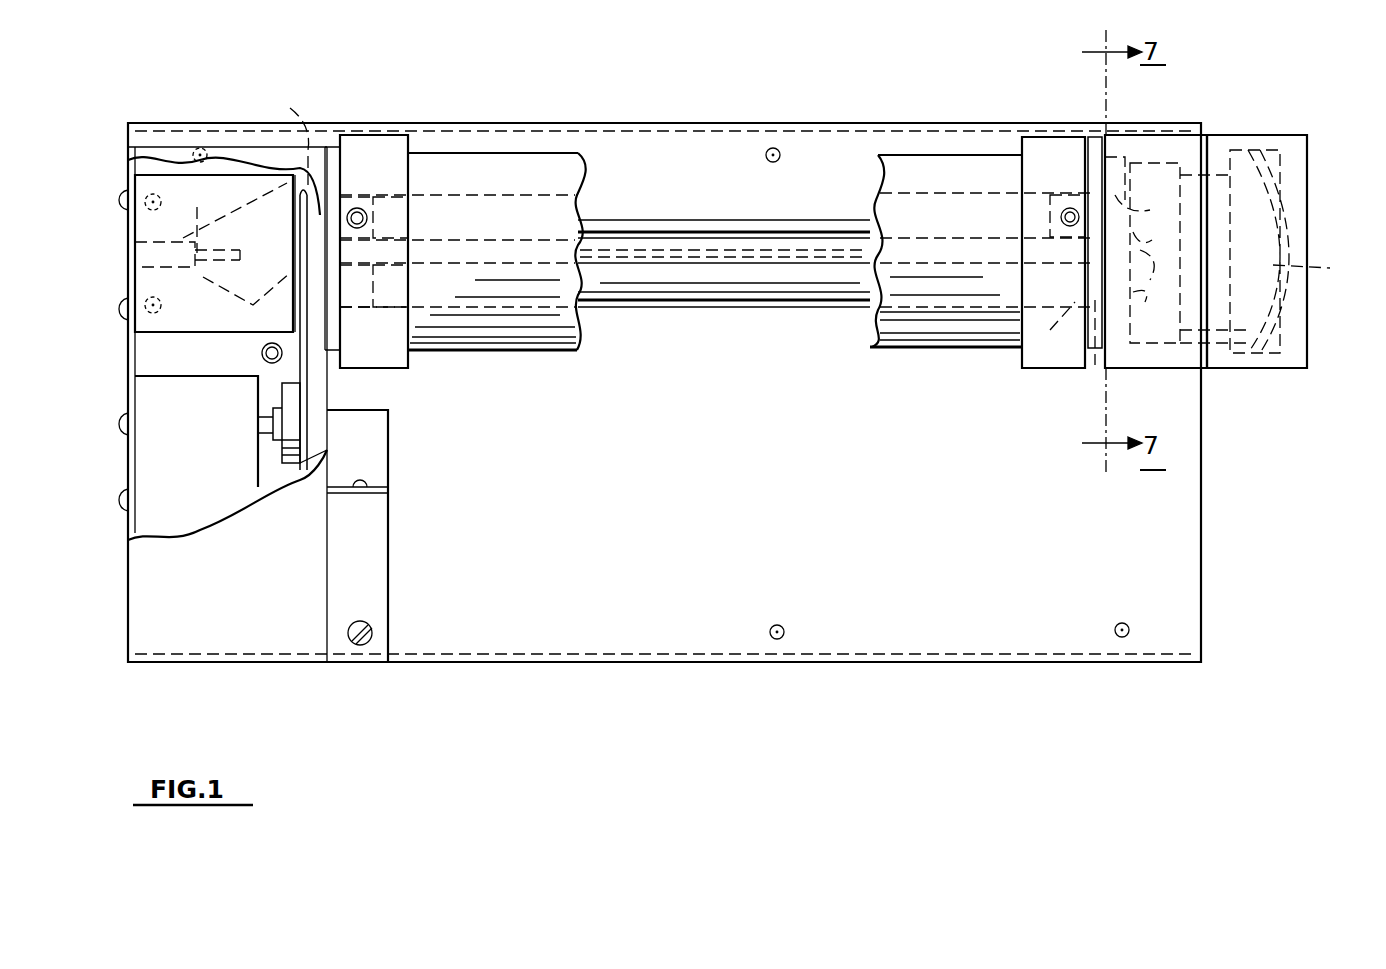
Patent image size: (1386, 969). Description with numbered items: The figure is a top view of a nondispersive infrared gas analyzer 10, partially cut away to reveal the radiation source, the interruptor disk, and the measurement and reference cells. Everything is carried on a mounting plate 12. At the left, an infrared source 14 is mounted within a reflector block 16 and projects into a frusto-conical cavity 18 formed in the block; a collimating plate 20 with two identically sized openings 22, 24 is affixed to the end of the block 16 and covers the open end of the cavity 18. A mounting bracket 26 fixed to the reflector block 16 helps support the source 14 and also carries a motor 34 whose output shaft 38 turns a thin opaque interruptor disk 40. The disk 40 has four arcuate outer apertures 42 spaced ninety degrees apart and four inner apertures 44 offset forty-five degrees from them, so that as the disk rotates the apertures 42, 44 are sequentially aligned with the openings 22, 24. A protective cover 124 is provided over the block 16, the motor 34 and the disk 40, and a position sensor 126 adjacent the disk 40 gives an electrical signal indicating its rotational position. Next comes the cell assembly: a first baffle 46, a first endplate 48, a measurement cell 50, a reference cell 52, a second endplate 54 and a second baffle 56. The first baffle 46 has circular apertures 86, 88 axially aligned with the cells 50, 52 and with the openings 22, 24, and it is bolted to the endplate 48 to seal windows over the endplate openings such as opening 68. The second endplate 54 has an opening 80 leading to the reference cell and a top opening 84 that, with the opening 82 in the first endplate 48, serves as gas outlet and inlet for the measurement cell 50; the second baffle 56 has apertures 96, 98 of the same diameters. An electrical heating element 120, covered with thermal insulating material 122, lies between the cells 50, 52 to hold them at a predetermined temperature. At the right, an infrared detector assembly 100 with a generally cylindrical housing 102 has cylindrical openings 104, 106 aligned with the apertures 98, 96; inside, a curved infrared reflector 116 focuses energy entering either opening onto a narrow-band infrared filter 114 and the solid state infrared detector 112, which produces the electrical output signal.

The nondispersive infrared gas analyzer 10 is at (1310, 470).
The mounting plate 12 is at (1212, 580).
The infrared source 14 is at (215, 240).
The reflector block 16 is at (155, 286).
The frusto-conical cavity 18 is at (225, 268).
The collimating plate 20 is at (283, 313).
The opening 22 is at (235, 210).
The opening 24 is at (244, 299).
The mounting bracket 26 is at (128, 353).
The motor 34 is at (168, 460).
The motor output shaft 38 is at (265, 425).
The interruptor disk 40 is at (308, 372).
The outer apertures 42 is at (224, 148).
The inner apertures 44 is at (303, 272).
The first baffle 46 is at (325, 150).
The first endplate 48 is at (380, 135).
The measurement cell 50 is at (826, 200).
The reference cell 52 is at (818, 300).
The second endplate 54 is at (1035, 145).
The second baffle 56 is at (1095, 150).
The opening 68 is at (410, 283).
The opening 80 is at (1052, 331).
The opening 82 is at (360, 210).
The opening 84 is at (1070, 208).
The first circular aperture 86 is at (332, 190).
The second circular aperture 88 is at (333, 272).
The circular aperture 96 is at (1094, 349).
The circular aperture 98 is at (1177, 251).
The infrared detector assembly 100 is at (1265, 132).
The housing 102 is at (1262, 372).
The cylindrical opening 104 is at (1150, 200).
The cylindrical opening 106 is at (1151, 313).
The solid state infrared detector 112 is at (1162, 237).
The narrow-band infrared filter 114 is at (1165, 275).
The curved infrared reflector 116 is at (1325, 271).
The electrical heating element 120 is at (722, 228).
The thermal insulating material 122 is at (960, 350).
The protective cover 124 is at (217, 633).
The position sensor 126 is at (388, 445).